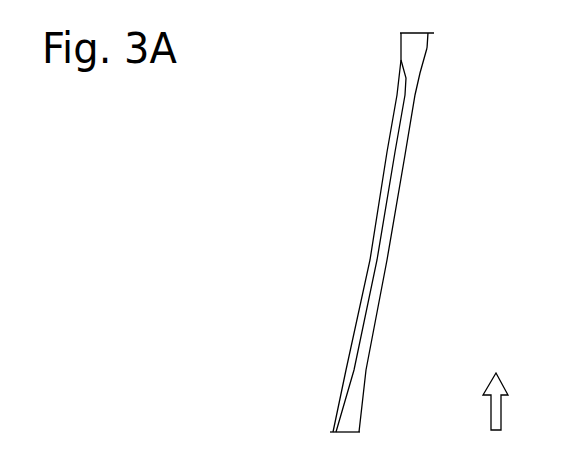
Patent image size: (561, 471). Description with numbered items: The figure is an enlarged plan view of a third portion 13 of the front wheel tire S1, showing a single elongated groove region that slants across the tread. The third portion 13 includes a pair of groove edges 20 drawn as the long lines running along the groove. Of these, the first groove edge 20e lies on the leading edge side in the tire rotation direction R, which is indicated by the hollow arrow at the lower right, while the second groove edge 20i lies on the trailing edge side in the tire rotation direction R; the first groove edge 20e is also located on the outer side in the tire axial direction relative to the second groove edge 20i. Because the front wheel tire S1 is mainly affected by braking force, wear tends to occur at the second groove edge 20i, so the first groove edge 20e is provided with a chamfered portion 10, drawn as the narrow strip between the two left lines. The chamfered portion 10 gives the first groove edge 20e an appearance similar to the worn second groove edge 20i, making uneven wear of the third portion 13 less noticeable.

The chamfered portion 10 is at (384, 232).
The third portion 13 is at (334, 251).
The groove edges 20 is at (378, 309).
The first groove edge 20e is at (397, 112).
The second groove edge 20i is at (403, 181).
The front wheel tire S1 is at (242, 422).
The tire rotation direction R is at (495, 390).